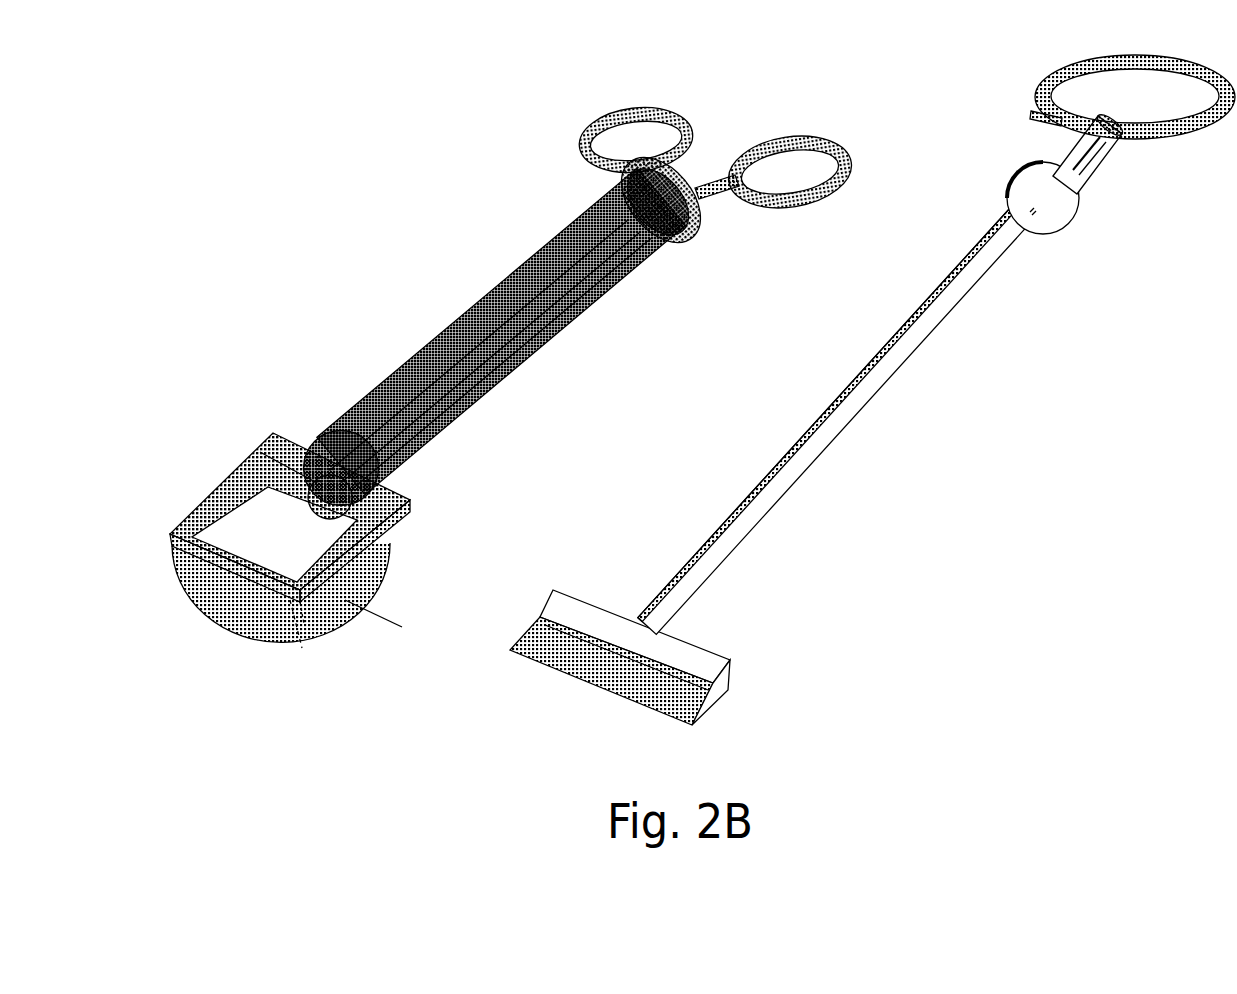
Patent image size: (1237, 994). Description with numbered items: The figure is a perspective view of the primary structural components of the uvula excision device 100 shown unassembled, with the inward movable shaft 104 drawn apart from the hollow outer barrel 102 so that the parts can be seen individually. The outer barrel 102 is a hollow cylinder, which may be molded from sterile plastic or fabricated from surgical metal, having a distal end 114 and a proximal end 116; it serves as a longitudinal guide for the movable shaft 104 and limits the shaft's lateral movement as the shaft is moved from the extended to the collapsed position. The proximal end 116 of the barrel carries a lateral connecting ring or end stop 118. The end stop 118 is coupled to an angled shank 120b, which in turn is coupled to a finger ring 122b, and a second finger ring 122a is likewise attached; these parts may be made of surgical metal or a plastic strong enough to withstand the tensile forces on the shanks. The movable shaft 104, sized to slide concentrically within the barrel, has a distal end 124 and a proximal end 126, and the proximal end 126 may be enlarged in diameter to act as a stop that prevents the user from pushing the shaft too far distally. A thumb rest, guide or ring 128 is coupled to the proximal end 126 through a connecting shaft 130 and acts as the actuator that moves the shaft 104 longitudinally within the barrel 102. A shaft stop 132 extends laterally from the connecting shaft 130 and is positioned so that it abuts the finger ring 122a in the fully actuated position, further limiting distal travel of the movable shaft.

The uvula excision device 100 is at (342, 762).
The hollow outer cylinder or barrel 102 is at (487, 300).
The inward movable shaft 104 is at (860, 387).
The distal end 114 is at (317, 442).
The proximal end 116 is at (620, 178).
The lateral connecting ring or end stop 118 is at (690, 235).
The angled shank 120b is at (717, 203).
The finger ring 122a is at (598, 125).
The finger ring 122b is at (786, 140).
The distal end 124 is at (680, 628).
The proximal end 126 is at (1067, 213).
The thumb rest, guide or ring 128 is at (1040, 80).
The connecting shaft 130 is at (1093, 172).
The shaft stop 132 is at (1030, 120).